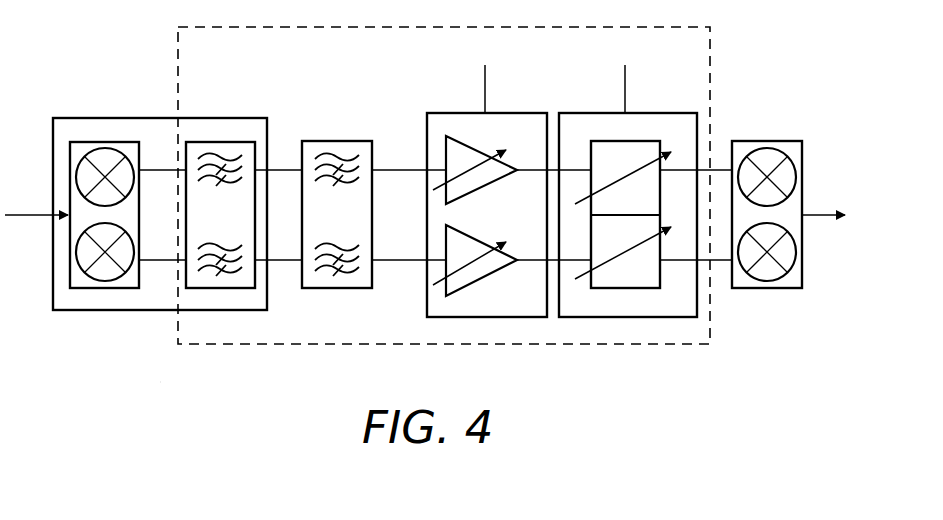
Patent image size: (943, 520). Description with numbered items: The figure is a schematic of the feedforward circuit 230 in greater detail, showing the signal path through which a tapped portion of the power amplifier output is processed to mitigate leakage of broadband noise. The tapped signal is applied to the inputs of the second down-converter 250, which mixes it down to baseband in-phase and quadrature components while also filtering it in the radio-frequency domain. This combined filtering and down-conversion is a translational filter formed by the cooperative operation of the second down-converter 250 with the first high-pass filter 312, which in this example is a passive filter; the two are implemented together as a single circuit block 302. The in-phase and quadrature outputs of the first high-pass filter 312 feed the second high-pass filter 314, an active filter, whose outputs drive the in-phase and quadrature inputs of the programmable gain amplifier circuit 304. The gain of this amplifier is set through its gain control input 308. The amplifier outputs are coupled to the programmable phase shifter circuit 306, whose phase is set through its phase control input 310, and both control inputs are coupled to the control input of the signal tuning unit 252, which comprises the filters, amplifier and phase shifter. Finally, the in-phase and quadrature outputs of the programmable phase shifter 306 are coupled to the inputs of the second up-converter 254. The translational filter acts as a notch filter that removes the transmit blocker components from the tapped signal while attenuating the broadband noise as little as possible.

The feedforward circuit 230 is at (161, 382).
The second down-converter 250 is at (104, 142).
The signal tuning unit 252 is at (178, 46).
The second up-converter 254 is at (766, 141).
The single circuit block 302 is at (80, 310).
The programmable gain amplifier circuit 304 is at (485, 317).
The programmable phase shifter circuit 306 is at (628, 317).
The gain control input 308 is at (485, 113).
The phase control input 310 is at (625, 113).
The first high-pass filter 312 is at (219, 142).
The second high-pass filter 314 is at (336, 141).